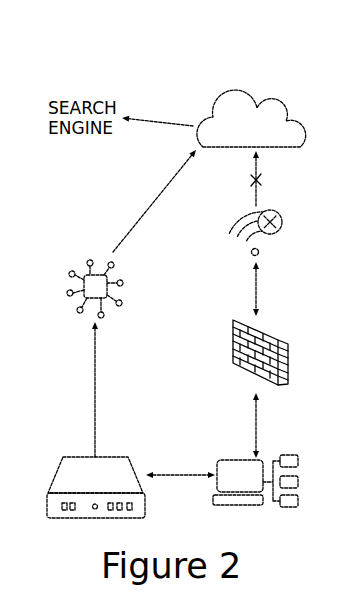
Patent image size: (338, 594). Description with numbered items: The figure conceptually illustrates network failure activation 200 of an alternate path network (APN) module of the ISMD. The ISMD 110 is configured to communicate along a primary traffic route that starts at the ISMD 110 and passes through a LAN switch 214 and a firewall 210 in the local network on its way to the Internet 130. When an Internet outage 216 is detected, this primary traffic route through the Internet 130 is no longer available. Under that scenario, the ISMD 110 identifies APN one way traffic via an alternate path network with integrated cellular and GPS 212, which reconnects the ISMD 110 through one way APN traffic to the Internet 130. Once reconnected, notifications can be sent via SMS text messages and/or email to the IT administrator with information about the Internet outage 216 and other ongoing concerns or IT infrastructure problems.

The network failure activation 200 is at (116, 50).
The Internet 130 is at (235, 113).
The ISMD 110 is at (68, 482).
The alternate path network (APN) with integrated cellular and GPS 212 is at (97, 288).
The LAN switch 214 is at (238, 473).
The Internet outage 216 is at (263, 247).
The firewall 210 is at (268, 340).